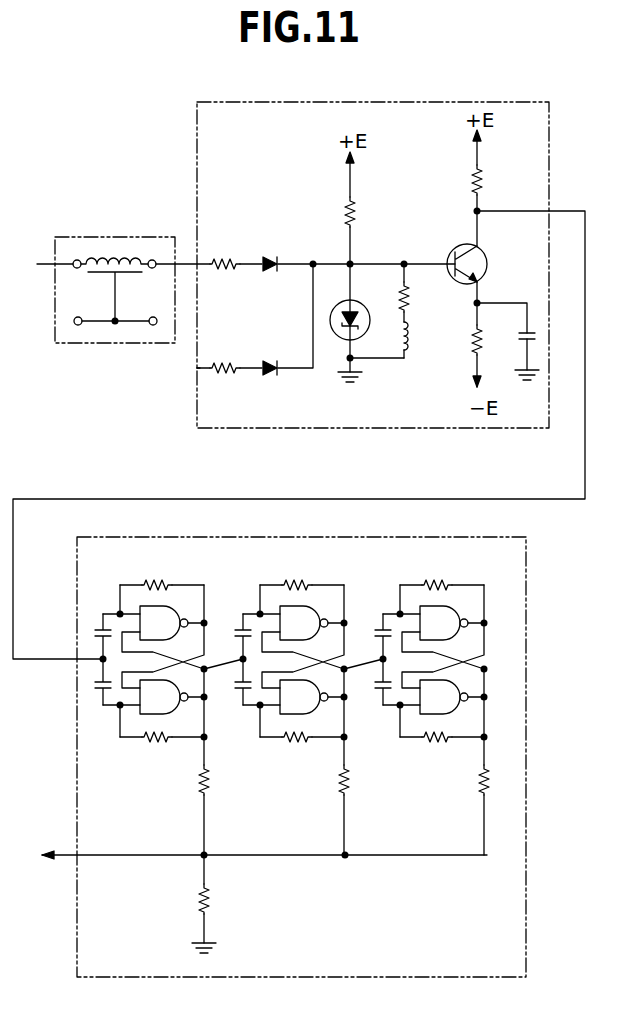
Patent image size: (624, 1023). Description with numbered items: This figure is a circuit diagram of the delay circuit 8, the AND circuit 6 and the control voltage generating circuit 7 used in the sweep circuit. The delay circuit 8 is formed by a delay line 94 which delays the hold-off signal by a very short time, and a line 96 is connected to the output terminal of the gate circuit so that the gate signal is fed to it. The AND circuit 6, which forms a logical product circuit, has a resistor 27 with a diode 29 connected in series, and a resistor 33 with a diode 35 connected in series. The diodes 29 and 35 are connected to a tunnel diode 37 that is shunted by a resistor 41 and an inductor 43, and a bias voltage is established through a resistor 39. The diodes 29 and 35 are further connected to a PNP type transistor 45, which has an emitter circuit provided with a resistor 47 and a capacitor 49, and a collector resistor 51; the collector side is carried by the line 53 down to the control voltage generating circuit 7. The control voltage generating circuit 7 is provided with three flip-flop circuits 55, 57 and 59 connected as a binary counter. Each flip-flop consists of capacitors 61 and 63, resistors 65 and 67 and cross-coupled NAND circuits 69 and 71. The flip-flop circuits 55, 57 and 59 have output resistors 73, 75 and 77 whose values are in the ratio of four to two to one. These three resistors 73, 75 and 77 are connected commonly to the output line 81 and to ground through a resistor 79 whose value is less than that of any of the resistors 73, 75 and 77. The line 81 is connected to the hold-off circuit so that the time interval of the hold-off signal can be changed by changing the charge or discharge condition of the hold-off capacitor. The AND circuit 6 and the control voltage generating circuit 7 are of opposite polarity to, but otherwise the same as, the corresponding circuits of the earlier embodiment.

The AND circuit 6 is at (197, 140).
The control voltage generating circuit 7 is at (526, 552).
The delay circuit 8 is at (125, 237).
The delay line 94 is at (103, 256).
The line 96 is at (197, 370).
The resistor 27 is at (226, 357).
The diode 29 is at (272, 361).
The resistor 33 is at (222, 259).
The diode 35 is at (272, 257).
The tunnel diode 37 is at (362, 306).
The resistor 39 is at (356, 212).
The resistor 41 is at (409, 296).
The inductor 43 is at (409, 337).
The PNP type transistor 45 is at (488, 264).
The resistor 47 is at (472, 342).
The capacitor 49 is at (523, 335).
The collector resistor 51 is at (483, 178).
The output line 53 is at (585, 476).
The flip-flop circuit 55 is at (180, 587).
The flip-flop circuit 57 is at (338, 583).
The flip-flop circuit 59 is at (478, 583).
The capacitor 61 is at (103, 628).
The capacitor 63 is at (103, 692).
The resistor 65 is at (158, 580).
The resistor 67 is at (158, 742).
The NAND circuit 69 is at (164, 606).
The NAND circuit 71 is at (168, 714).
The output resistor 73 is at (209, 779).
The output resistor 75 is at (363, 780).
The output resistor 77 is at (503, 780).
The resistor 79 is at (209, 897).
The output line 81 is at (264, 872).